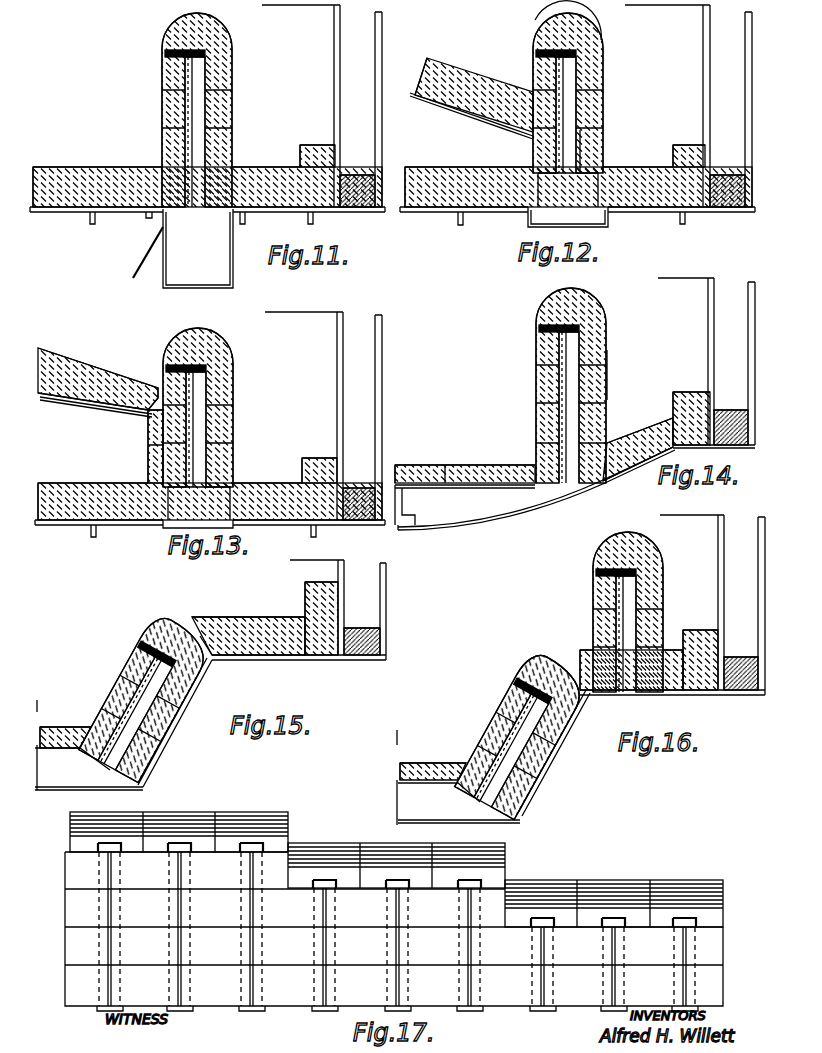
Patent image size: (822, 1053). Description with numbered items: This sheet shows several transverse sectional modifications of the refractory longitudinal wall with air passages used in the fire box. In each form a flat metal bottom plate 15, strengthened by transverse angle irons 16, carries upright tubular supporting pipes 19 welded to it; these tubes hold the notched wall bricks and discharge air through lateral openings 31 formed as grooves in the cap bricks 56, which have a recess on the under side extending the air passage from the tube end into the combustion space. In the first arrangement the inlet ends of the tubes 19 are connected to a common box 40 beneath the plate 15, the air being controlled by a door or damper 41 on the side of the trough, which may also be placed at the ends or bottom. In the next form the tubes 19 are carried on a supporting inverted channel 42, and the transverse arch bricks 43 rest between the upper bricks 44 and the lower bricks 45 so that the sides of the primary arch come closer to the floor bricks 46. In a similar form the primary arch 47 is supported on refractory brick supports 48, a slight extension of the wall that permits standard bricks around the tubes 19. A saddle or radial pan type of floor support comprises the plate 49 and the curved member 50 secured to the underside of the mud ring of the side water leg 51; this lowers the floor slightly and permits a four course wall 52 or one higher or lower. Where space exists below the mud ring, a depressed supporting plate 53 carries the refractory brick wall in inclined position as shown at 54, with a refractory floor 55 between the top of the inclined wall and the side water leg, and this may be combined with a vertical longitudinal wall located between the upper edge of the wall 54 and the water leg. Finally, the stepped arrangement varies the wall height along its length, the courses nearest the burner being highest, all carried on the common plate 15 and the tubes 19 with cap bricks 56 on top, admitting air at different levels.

In FIG. 11, the bottom plate 15 is at (126, 212).
In FIG. 12, the bottom plate 15 is at (635, 212).
In FIG. 13, the bottom plate 15 is at (66, 526).
In FIG. 17, the bottom plate 15 is at (505, 1008).
In FIG. 11, the transverse angle irons 16 is at (92, 224).
In FIG. 12, the transverse angle irons 16 is at (686, 222).
In FIG. 13, the transverse angle irons 16 is at (96, 536).
In FIG. 11, the tubular supporting pipes 19 is at (232, 112).
In FIG. 12, the tubular supporting pipes 19 is at (603, 110).
In FIG. 13, the tubular supporting pipes 19 is at (210, 468).
In FIG. 14, the tubular supporting pipes 19 is at (585, 424).
In FIG. 15, the tubular supporting pipes 19 is at (147, 696).
In FIG. 16, the tubular supporting pipes 19 is at (630, 606).
In FIG. 17, the tubular supporting pipes 19 is at (458, 910).
In FIG. 11, the air passage openings 31 is at (167, 54).
In FIG. 12, the air passage openings 31 is at (556, 53).
In FIG. 13, the air passage openings 31 is at (186, 368).
In FIG. 14, the air passage openings 31 is at (538, 327).
In FIG. 16, the air passage openings 31 is at (598, 572).
In FIG. 11, the box 40 is at (198, 248).
In FIG. 11, the door or damper 41 is at (140, 266).
In FIG. 12, the supporting inverted channel 42 is at (568, 200).
In FIG. 13, the supporting inverted channel 42 is at (198, 507).
In FIG. 12, the transverse arch bricks 43 is at (470, 78).
In FIG. 12, the upper bricks 44 is at (603, 62).
In FIG. 12, the lower bricks 45 is at (603, 152).
In FIG. 11, the floor bricks 46 is at (207, 187).
In FIG. 12, the floor bricks 46 is at (467, 178).
In FIG. 13, the floor bricks 46 is at (210, 501).
In FIG. 13, the primary arch 47 is at (97, 372).
In FIG. 13, the refractory brick supports 48 is at (150, 433).
In FIG. 14, the plate 49 is at (478, 485).
In FIG. 14, the curved member 50 is at (510, 517).
In FIG. 11, the side water leg 51 is at (322, 106).
In FIG. 12, the side water leg 51 is at (688, 106).
In FIG. 13, the side water leg 51 is at (323, 416).
In FIG. 14, the side water leg 51 is at (706, 363).
In FIG. 15, the side water leg 51 is at (338, 607).
In FIG. 16, the side water leg 51 is at (712, 602).
In FIG. 14, the four course wall 52 is at (607, 352).
In FIG. 15, the depressed supporting plate 53 is at (165, 738).
In FIG. 16, the depressed supporting plate 53 is at (572, 745).
In FIG. 15, the inclined refractory brick wall 54 is at (130, 670).
In FIG. 16, the inclined refractory brick wall 54 is at (510, 704).
In FIG. 15, the refractory floor 55 is at (232, 617).
In FIG. 16, the refractory floor 55 is at (631, 670).
In FIG. 16, the cap bricks 56 is at (535, 665).
In FIG. 17, the cap bricks 56 is at (505, 855).